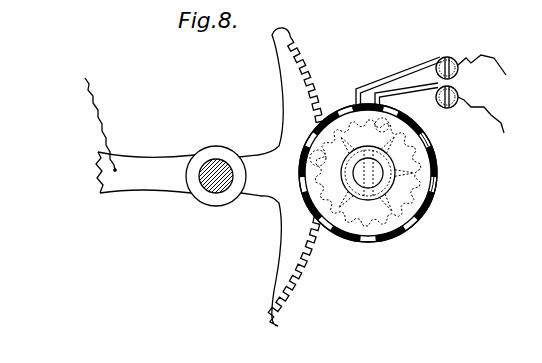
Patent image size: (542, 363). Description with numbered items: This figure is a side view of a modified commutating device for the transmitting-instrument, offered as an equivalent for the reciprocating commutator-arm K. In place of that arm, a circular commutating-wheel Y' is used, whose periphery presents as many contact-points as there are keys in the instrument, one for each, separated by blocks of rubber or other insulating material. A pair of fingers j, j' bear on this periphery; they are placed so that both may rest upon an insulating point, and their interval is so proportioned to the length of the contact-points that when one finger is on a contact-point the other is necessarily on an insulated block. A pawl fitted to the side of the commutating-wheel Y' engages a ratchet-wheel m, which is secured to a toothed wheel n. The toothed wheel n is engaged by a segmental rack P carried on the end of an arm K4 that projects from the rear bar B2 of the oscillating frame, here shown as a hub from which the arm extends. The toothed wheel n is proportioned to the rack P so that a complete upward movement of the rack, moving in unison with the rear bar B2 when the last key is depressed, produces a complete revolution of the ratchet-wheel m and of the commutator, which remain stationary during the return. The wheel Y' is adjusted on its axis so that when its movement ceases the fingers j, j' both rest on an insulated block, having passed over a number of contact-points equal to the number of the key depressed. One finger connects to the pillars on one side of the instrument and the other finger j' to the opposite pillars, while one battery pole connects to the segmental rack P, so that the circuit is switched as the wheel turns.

The stop U is at (352, 108).
The contact-finger j is at (431, 80).
The contact-finger j' is at (439, 105).
The reciprocating commutator-arm K is at (367, 180).
The arm K4 is at (282, 165).
The toothed wheel n is at (431, 148).
The ratchet-wheel m is at (433, 196).
The commutating-wheel Y' is at (368, 192).
The segmental rack P is at (283, 177).
The rear bar B2 is at (210, 191).